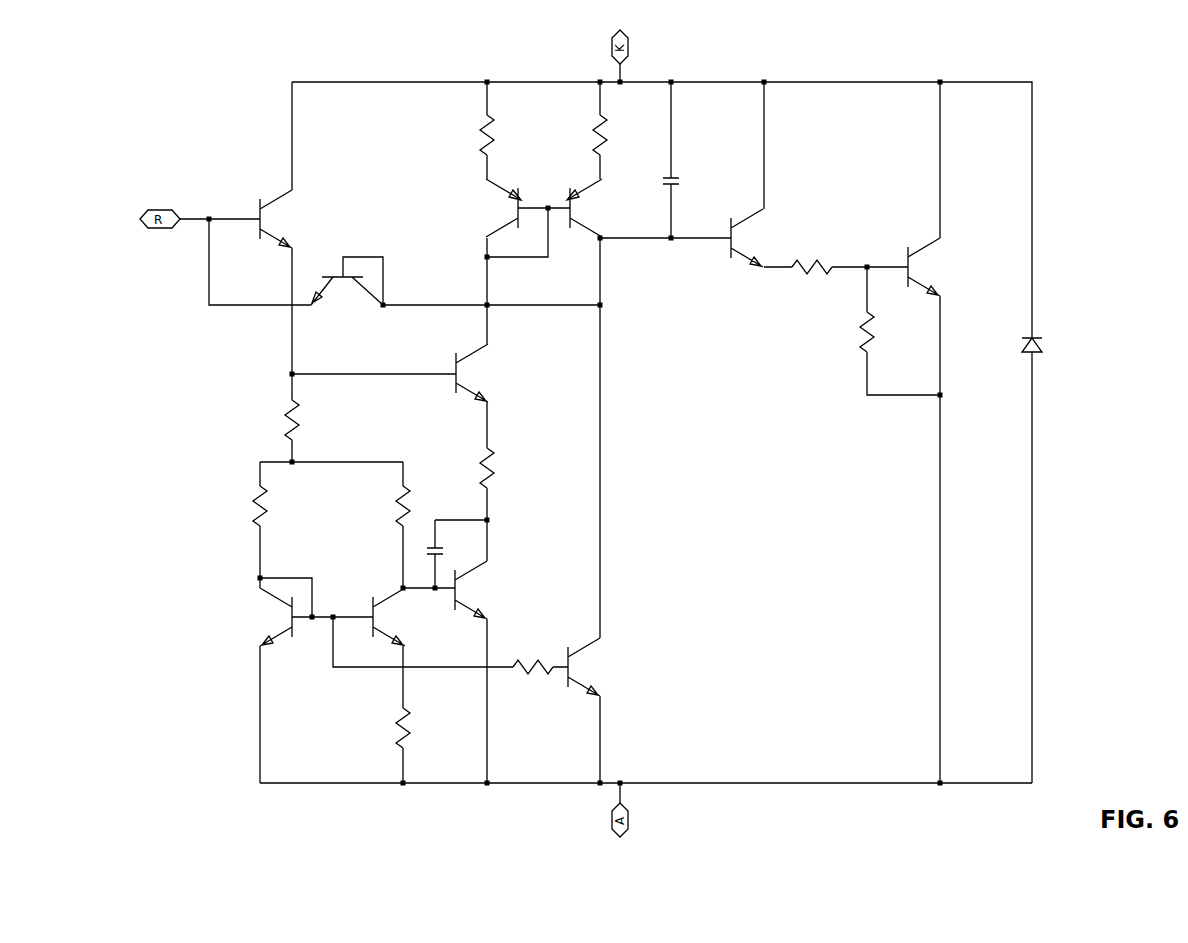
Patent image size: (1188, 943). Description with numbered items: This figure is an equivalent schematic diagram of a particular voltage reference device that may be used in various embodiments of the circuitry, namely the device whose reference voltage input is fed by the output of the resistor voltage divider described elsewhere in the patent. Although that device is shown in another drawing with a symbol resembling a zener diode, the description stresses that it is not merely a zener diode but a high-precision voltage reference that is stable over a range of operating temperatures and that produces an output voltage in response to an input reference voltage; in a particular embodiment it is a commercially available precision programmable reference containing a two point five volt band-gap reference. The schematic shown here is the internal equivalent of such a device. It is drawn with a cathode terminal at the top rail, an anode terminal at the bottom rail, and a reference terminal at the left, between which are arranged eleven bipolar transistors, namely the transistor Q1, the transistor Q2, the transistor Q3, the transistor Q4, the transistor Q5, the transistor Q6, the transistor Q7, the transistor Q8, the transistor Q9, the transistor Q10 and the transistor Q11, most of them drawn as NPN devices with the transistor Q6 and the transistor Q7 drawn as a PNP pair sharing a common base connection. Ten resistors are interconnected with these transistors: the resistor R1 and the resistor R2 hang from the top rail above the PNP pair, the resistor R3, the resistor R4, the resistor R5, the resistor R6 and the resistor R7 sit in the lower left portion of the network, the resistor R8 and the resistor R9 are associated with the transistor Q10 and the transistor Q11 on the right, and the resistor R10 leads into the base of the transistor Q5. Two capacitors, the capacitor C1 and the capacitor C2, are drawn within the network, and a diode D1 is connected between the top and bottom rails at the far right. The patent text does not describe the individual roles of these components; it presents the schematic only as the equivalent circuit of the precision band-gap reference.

The NPN transistor Q1 is at (286, 219).
The NPN transistor Q2 is at (483, 373).
The NPN transistor Q3 is at (263, 617).
The NPN transistor Q4 is at (399, 617).
The NPN transistor Q5 is at (594, 667).
The PNP transistor Q6 is at (489, 208).
The PNP transistor Q7 is at (596, 208).
The NPN transistor Q8 is at (482, 590).
The NPN transistor Q9 is at (347, 301).
The NPN transistor Q10 is at (759, 238).
The NPN transistor Q11 is at (935, 267).
The resistor R1 800 ohm R1 is at (502, 135).
The resistor R2 800 ohm R2 is at (615, 135).
The resistor R3 7.2k R3 is at (421, 506).
The resistor R4 2.4k R4 is at (277, 506).
The resistor R5 7.3k R5 is at (526, 468).
The resistor R6 4k R6 is at (263, 420).
The resistor R7 800 ohm R7 is at (419, 729).
The resistor R8 10k R8 is at (881, 332).
The resistor R9 150 ohm R9 is at (812, 255).
The resistor R10 1k R10 is at (533, 667).
The capacitor C1 20p C1 is at (446, 554).
The capacitor C2 20p C2 is at (682, 160).
The diode D1 is at (1025, 340).